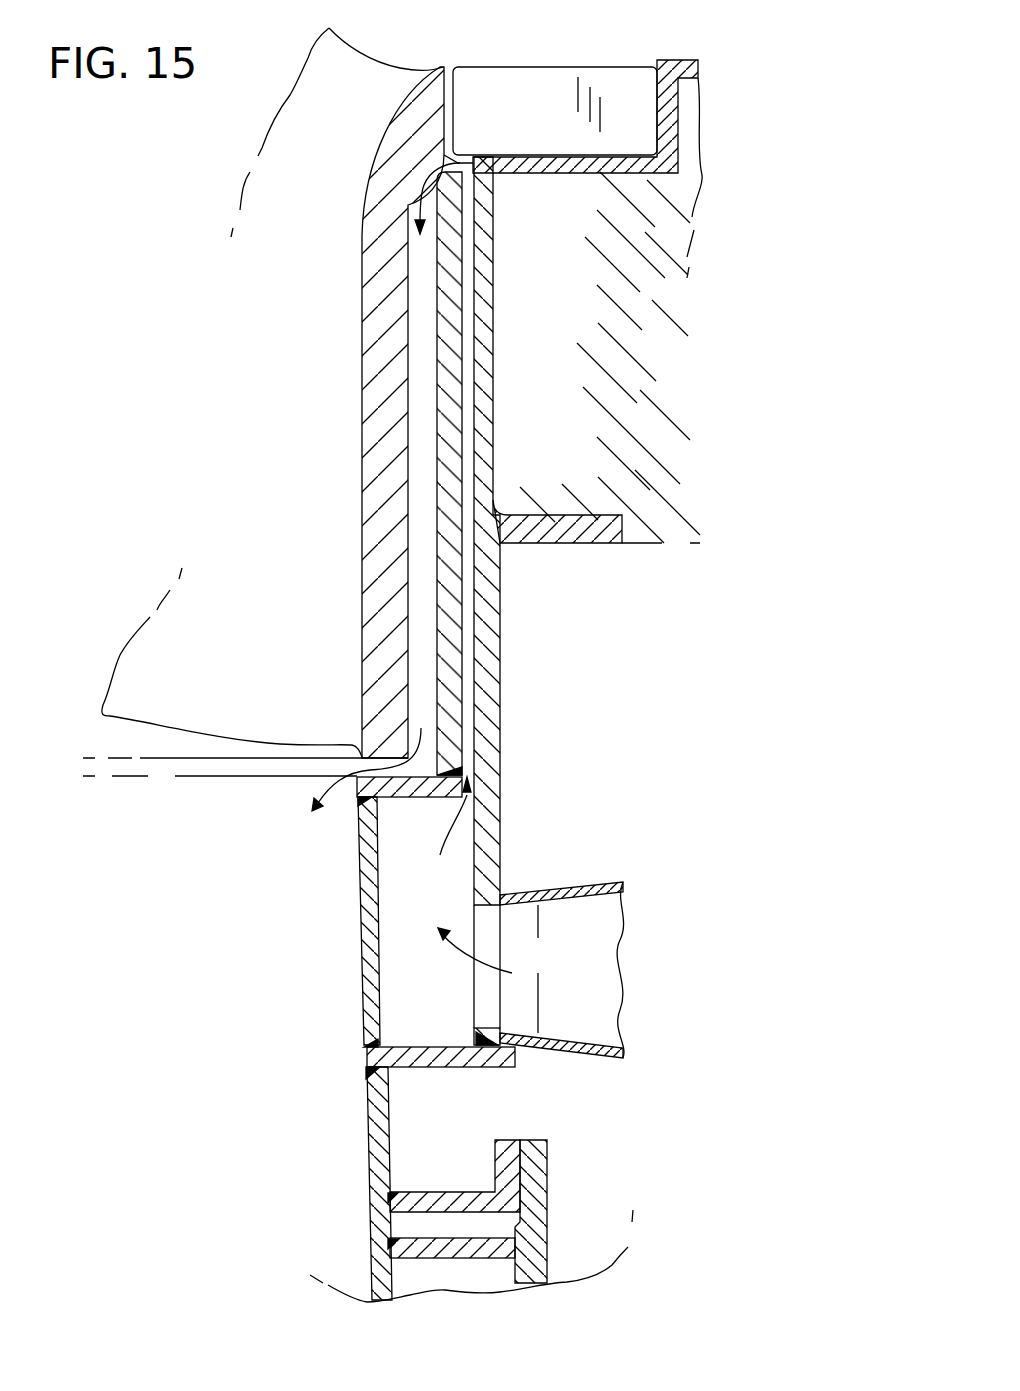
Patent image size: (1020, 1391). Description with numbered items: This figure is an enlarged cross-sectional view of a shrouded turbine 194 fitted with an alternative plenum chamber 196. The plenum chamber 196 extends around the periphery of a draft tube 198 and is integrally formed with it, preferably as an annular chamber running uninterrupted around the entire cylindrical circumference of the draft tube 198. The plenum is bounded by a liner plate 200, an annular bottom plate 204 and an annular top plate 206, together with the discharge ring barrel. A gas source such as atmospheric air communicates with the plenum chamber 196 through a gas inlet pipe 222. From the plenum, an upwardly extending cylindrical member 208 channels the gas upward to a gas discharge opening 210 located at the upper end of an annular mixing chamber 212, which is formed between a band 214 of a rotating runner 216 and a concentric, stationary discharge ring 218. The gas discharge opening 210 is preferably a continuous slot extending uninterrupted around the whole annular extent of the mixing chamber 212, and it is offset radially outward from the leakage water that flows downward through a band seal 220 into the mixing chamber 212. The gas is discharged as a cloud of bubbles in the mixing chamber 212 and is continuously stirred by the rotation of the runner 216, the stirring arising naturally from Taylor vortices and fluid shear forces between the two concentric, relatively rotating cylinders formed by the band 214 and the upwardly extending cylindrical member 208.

The shrouded turbine 194 is at (135, 432).
The plenum chamber 196 is at (451, 932).
The draft tube 198 is at (367, 1142).
The liner plate 200 is at (362, 937).
The annular bottom plate 204 is at (449, 1067).
The annular top plate 206 is at (418, 797).
The upwardly extending cylindrical member 208 is at (438, 452).
The gas discharge opening 210 is at (472, 162).
The annular mixing chamber 212 is at (420, 356).
The band 214 is at (362, 285).
The rotating runner 216 is at (378, 40).
The stationary discharge ring 218 is at (493, 318).
The band seal 220 is at (445, 65).
The gas inlet pipe 222 is at (586, 1052).